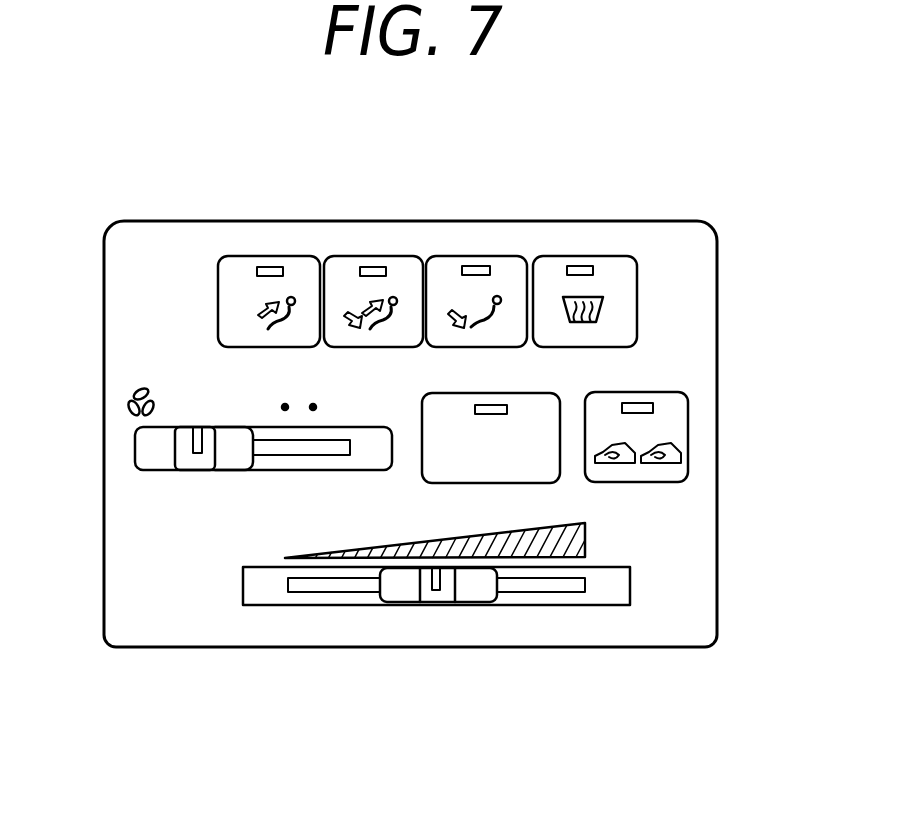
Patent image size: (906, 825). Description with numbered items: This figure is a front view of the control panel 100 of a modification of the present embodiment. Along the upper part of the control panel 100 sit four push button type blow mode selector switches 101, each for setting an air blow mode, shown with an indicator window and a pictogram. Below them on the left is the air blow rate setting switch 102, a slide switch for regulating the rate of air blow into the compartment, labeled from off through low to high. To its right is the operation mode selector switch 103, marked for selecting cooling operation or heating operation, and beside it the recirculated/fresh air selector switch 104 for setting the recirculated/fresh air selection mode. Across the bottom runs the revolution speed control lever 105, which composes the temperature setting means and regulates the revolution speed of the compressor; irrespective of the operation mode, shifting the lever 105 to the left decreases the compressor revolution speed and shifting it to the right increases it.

The control panel 100 is at (690, 208).
The blow mode selector switch 101 is at (250, 264).
The air blow rate setting switch 102 is at (180, 458).
The operation mode selector switch 103 is at (540, 402).
The recirculated/fresh air selector switch 104 is at (652, 477).
The revolution speed control lever 105 is at (427, 597).